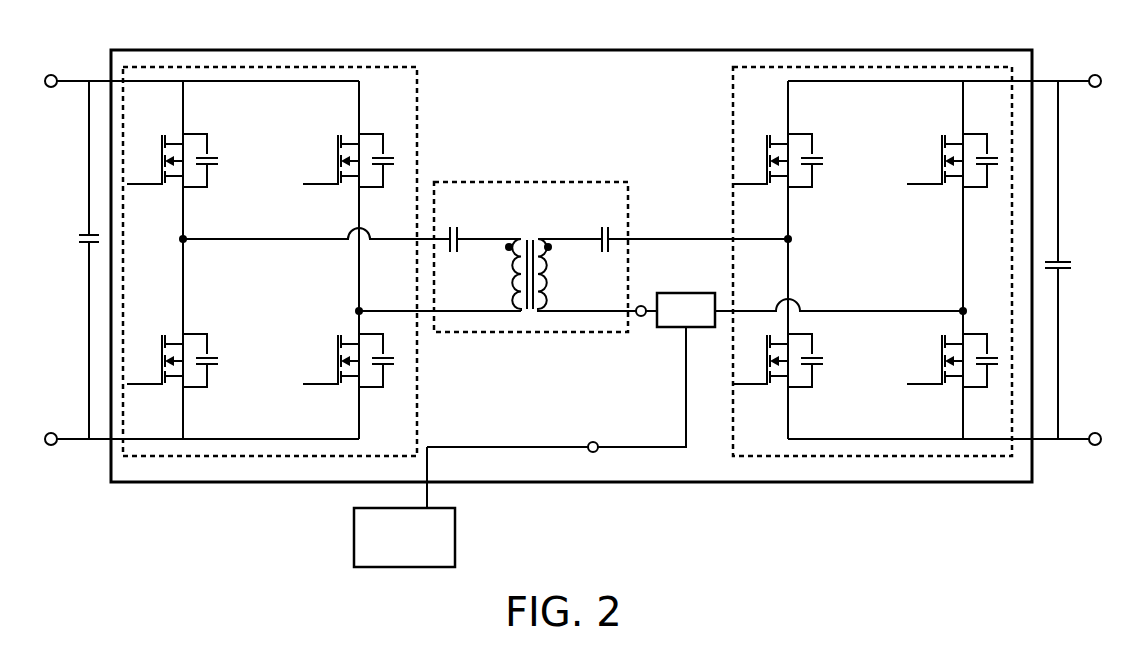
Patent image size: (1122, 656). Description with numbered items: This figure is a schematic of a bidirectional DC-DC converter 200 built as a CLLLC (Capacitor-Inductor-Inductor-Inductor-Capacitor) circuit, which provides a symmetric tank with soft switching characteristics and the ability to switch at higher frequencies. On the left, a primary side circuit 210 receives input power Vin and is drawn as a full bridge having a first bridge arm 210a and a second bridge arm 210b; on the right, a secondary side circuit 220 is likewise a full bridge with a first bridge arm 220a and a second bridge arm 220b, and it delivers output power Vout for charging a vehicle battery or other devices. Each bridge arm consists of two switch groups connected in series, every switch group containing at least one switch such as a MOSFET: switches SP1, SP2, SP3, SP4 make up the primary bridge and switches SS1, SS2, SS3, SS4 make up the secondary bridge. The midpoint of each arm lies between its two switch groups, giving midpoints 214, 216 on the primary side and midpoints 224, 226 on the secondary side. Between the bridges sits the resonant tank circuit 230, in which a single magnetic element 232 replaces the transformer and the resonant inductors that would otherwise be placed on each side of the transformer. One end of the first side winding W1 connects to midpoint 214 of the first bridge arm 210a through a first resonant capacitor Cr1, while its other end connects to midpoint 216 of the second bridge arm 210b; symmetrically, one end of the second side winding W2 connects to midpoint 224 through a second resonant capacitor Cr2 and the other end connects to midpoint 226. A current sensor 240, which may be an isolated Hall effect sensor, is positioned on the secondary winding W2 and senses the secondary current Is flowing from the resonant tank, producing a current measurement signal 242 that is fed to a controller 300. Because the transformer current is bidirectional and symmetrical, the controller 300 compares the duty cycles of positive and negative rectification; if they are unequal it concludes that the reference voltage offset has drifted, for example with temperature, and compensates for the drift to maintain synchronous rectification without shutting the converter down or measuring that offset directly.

The DC-DC converter 200 is at (608, 50).
The primary side circuit 210 is at (272, 67).
The first bridge arm 210a is at (183, 293).
The second bridge arm 210b is at (359, 298).
The midpoint 214 is at (183, 238).
The midpoint 216 is at (361, 309).
The secondary side circuit 220 is at (857, 67).
The first bridge arm 220a is at (789, 292).
The second bridge arm 220b is at (963, 262).
The midpoint 224 is at (788, 232).
The midpoint 226 is at (963, 306).
The resonant tank circuit 230 is at (535, 182).
The magnetic element 232 is at (557, 255).
The first side winding W1 is at (504, 280).
The second side winding W2 is at (565, 279).
The first resonant capacitor Cr1 is at (481, 253).
The second resonant capacitor Cr2 is at (663, 253).
The current sensor 240 is at (780, 370).
The current measurement signal 242 is at (593, 442).
The secondary current Is is at (641, 316).
The controller 300 is at (404, 507).
The switch SP1 is at (193, 134).
The switch SP2 is at (196, 387).
The switch SP3 is at (366, 134).
The switch SP4 is at (369, 387).
The switch SS1 is at (788, 120).
The switch SS2 is at (788, 400).
The switch SS3 is at (963, 120).
The switch SS4 is at (963, 400).
The input power Vin is at (200, 260).
The output power Vout is at (953, 260).